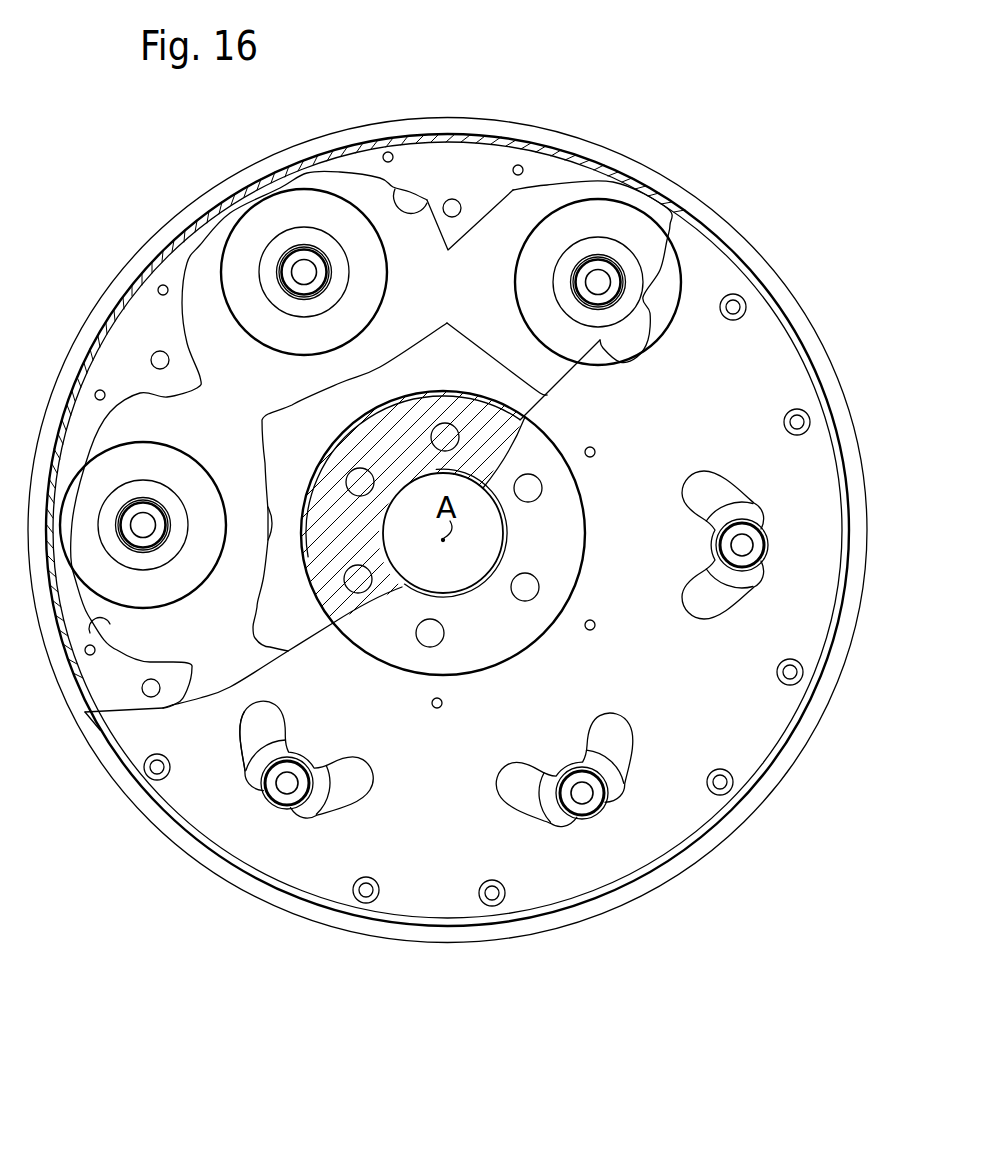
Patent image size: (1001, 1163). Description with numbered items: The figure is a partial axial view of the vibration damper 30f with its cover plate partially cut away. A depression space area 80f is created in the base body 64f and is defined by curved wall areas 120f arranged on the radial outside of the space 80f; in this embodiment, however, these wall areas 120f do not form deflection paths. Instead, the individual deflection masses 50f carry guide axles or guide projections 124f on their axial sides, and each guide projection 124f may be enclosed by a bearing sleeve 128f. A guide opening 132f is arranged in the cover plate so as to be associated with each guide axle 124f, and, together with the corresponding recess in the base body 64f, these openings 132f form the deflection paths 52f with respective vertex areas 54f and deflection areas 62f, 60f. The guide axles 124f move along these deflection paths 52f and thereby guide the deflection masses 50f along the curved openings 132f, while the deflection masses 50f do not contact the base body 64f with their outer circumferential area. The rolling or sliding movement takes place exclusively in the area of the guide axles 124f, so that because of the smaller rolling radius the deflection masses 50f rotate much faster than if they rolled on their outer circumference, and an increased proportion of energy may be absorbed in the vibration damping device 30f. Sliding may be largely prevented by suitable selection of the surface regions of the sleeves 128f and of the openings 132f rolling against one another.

The vibration damper 30f is at (716, 163).
The base body 64f is at (582, 152).
The deflection masses 50f is at (343, 223).
The guide projection 124f is at (283, 268).
The curved wall areas 120f is at (428, 204).
The depression space area 80f is at (150, 640).
The deflection area 60f is at (263, 868).
The vertex area 54f is at (273, 803).
The deflection paths 52f is at (308, 817).
The deflection area 62f is at (327, 813).
The guide opening 132f is at (347, 793).
The bearing sleeve 128f is at (557, 818).